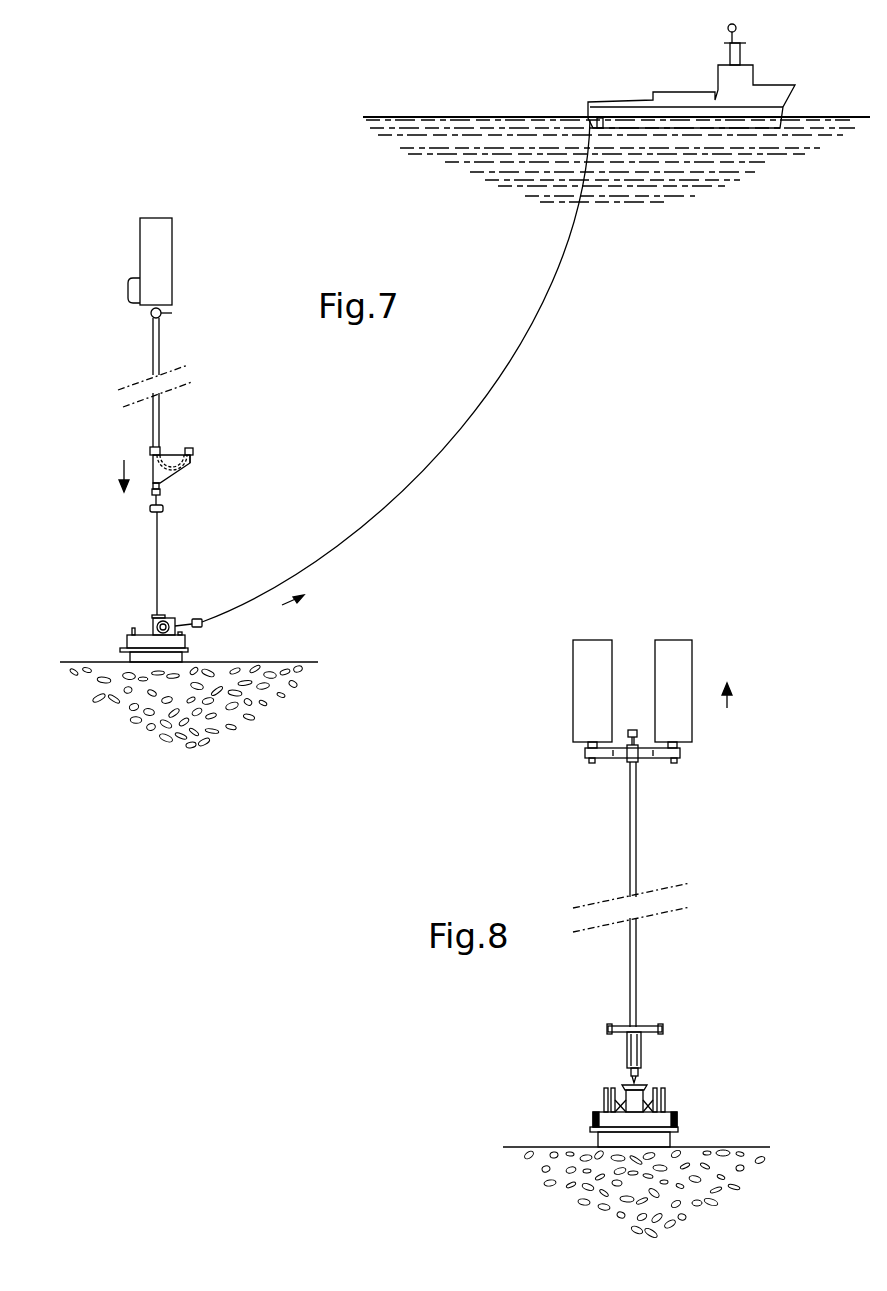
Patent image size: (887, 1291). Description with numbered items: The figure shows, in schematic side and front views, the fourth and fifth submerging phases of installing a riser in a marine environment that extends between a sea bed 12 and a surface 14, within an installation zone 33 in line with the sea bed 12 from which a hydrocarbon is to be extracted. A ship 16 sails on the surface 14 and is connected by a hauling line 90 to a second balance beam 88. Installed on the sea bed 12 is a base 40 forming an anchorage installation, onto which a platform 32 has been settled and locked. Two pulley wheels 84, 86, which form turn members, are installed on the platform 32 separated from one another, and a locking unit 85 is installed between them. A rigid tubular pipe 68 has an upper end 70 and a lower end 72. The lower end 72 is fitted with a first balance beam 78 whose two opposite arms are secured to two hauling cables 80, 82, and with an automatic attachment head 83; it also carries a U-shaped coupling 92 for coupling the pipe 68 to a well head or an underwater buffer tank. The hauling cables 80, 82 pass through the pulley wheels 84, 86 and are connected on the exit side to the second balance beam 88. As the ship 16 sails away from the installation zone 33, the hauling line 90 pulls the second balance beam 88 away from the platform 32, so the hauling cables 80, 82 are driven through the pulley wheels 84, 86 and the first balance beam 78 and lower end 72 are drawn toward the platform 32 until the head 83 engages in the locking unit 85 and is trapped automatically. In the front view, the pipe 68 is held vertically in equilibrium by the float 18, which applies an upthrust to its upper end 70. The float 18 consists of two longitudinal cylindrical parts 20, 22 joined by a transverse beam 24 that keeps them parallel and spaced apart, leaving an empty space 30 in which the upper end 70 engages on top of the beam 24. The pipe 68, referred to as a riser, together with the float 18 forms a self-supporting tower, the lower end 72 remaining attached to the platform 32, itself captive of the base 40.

In FIG. 7, the sea bed 12 is at (85, 661).
In FIG. 8, the sea bed 12 is at (520, 1147).
In FIG. 7, the surface 14 is at (470, 117).
In FIG. 7, the ship 16 is at (646, 66).
In FIG. 7, the float 18 is at (139, 246).
In FIG. 8, the float 18 is at (676, 620).
In FIG. 8, the longitudinal cylindrical part 20 is at (583, 683).
In FIG. 8, the longitudinal cylindrical part 22 is at (686, 665).
In FIG. 8, the transverse beam 24 is at (585, 752).
In FIG. 8, the empty space 30 is at (647, 659).
In FIG. 7, the platform 32 is at (140, 636).
In FIG. 8, the platform 32 is at (676, 1120).
In FIG. 7, the installation zone 33 is at (158, 190).
In FIG. 7, the base 40 is at (128, 656).
In FIG. 8, the base 40 is at (600, 1138).
In FIG. 7, the rigid tubular pipe 68 is at (152, 346).
In FIG. 8, the rigid tubular pipe 68 is at (637, 815).
In FIG. 7, the upper end 70 is at (151, 450).
In FIG. 8, the upper end 70 is at (632, 730).
In FIG. 7, the lower end 72 is at (160, 452).
In FIG. 8, the first balance beam 78 is at (648, 1028).
In FIG. 7, the hauling cable 80 is at (156, 520).
In FIG. 7, the hauling cable 82 is at (160, 536).
In FIG. 7, the automatic attachment head 83 is at (163, 508).
In FIG. 7, the pulley wheel 84 is at (172, 618).
In FIG. 8, the pulley wheel 84 is at (604, 1098).
In FIG. 7, the locking unit 85 is at (160, 615).
In FIG. 8, the locking unit 85 is at (624, 1086).
In FIG. 7, the pulley wheel 86 is at (153, 626).
In FIG. 8, the pulley wheel 86 is at (668, 1096).
In FIG. 7, the second balance beam 88 is at (201, 628).
In FIG. 7, the hauling line 90 is at (473, 428).
In FIG. 7, the U-shaped coupling 92 is at (191, 456).